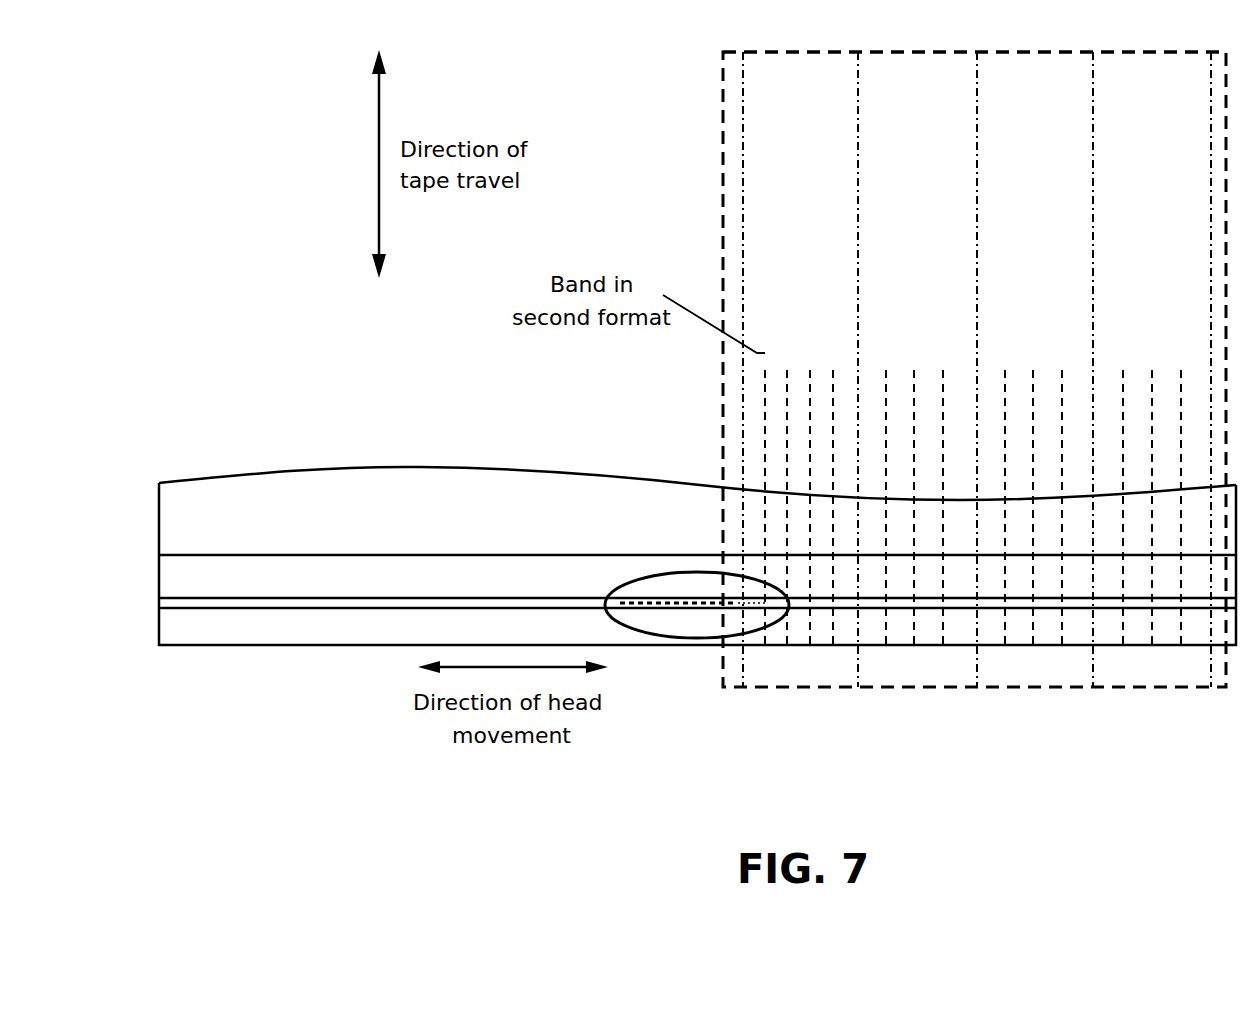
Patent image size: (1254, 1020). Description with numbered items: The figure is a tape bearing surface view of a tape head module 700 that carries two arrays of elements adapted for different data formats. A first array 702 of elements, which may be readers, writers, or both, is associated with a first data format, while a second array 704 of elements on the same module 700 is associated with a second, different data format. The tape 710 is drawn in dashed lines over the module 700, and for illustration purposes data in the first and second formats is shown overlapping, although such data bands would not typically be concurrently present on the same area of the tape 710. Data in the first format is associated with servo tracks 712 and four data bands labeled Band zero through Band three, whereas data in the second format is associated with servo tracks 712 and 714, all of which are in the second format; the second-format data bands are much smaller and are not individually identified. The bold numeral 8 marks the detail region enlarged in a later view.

The module 700 is at (290, 470).
The first array 702 is at (668, 632).
The second array 704 is at (758, 630).
The tape 710 is at (723, 160).
The servo tracks 712 is at (858, 278).
The servo tracks 714 is at (787, 432).
The detail view reference to FIG. 8 is at (720, 637).